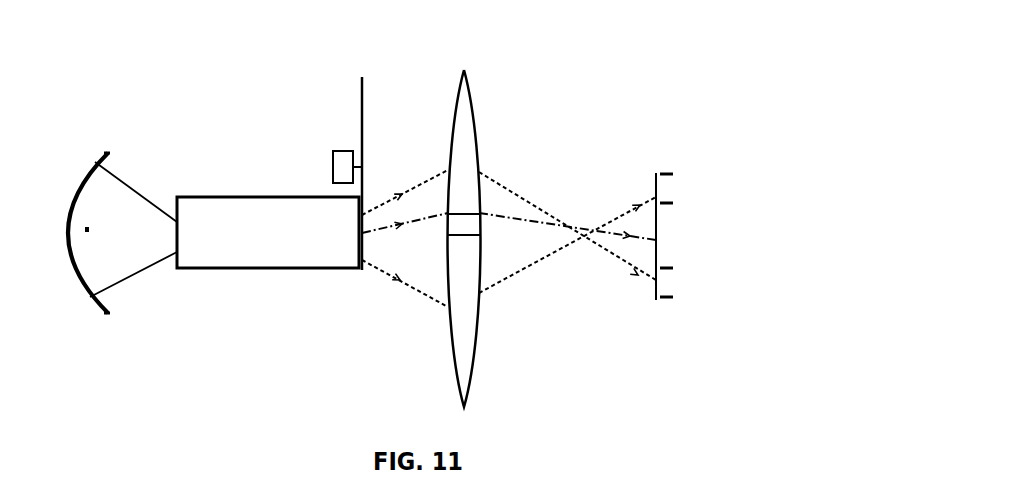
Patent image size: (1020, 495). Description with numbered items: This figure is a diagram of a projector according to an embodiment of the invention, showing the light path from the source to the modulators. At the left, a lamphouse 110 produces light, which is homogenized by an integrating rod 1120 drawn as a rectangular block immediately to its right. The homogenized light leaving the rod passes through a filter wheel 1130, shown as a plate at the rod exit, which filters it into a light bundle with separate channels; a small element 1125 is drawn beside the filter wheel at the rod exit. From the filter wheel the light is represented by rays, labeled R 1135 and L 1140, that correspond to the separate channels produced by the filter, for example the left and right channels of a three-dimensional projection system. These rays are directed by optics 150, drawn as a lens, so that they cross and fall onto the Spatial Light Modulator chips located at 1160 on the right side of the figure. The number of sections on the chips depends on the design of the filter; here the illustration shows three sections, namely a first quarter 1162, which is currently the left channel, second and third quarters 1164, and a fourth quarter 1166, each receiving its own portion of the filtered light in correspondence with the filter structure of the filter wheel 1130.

The lamphouse 110 is at (72, 135).
The integrating rod 1120 is at (210, 285).
The element adjacent to rod exit 1125 is at (340, 145).
The filter wheel 1130 is at (362, 107).
The optics 150 is at (464, 238).
The right ray R 1135 is at (509, 235).
The left ray L 1140 is at (509, 262).
The location of SLM chips 1160 is at (662, 133).
The first quarter 1162 is at (667, 185).
The 2nd & 3rd quarters 1164 is at (672, 235).
The 4th quarter 1166 is at (672, 285).